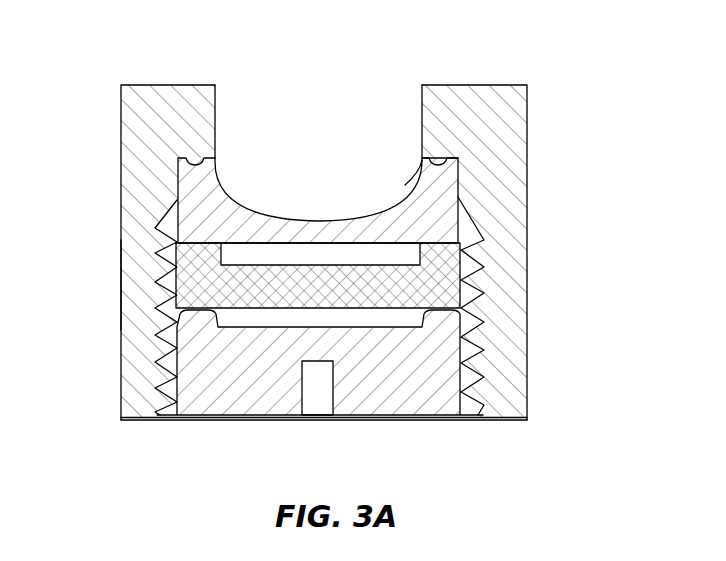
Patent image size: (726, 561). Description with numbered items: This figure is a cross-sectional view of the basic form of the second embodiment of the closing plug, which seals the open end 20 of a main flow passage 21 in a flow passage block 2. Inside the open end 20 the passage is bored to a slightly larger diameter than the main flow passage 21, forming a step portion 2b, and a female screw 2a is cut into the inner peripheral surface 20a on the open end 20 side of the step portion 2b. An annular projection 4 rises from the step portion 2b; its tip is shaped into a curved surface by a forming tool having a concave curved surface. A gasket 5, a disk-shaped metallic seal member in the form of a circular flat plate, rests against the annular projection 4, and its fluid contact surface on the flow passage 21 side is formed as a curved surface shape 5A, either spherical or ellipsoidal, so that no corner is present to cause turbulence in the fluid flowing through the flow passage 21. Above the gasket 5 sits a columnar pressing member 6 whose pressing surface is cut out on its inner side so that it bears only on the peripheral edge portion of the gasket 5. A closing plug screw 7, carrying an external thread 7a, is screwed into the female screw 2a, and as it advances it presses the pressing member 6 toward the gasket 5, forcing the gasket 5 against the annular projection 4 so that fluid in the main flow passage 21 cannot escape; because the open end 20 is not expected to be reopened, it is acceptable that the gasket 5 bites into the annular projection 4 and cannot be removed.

The flow passage block 2 is at (480, 107).
The female screw 2a is at (110, 325).
The step portion 2b is at (412, 172).
The open end 20 is at (252, 424).
The inner peripheral surface 20a is at (462, 160).
The main flow passage 21 is at (318, 107).
The annular projection 4 is at (180, 208).
The gasket 5 is at (178, 172).
The curved surface shape 5A is at (288, 207).
The pressing member 6 is at (473, 289).
The closing plug screw 7 is at (478, 400).
The external thread of nut 7a is at (478, 363).